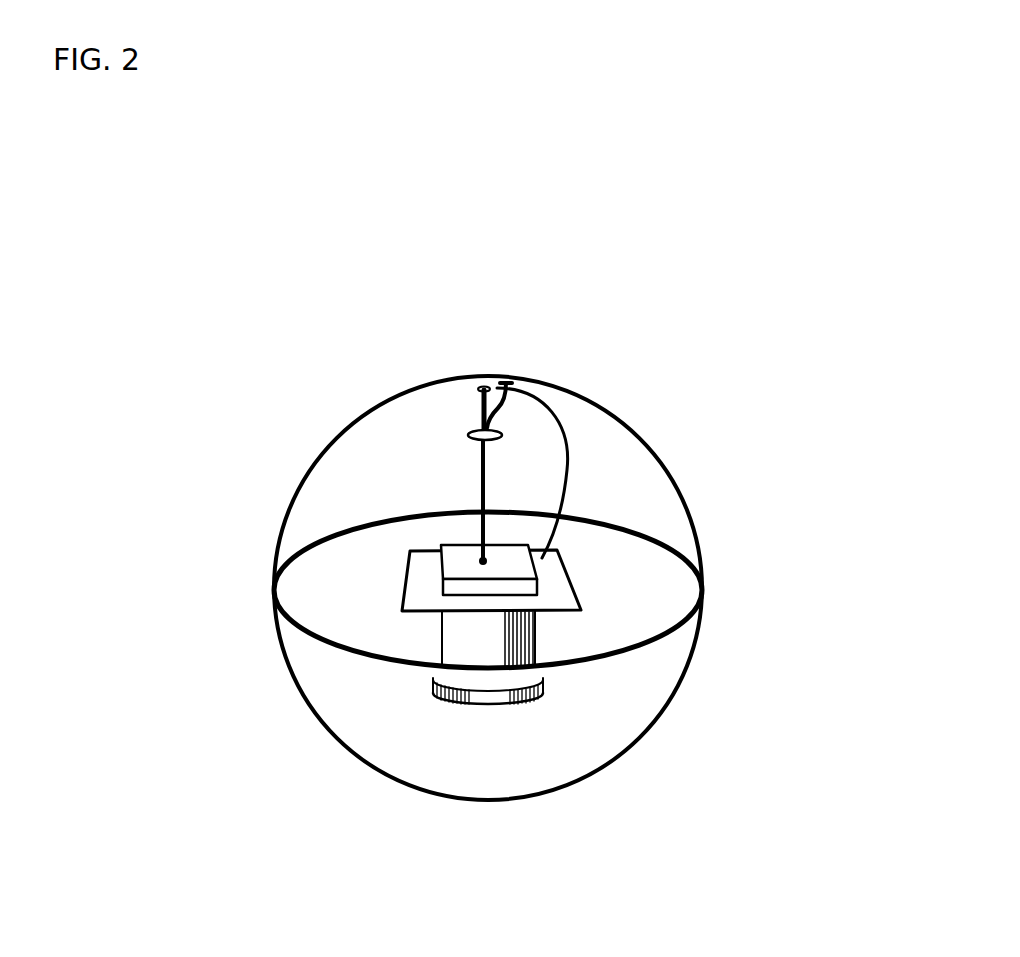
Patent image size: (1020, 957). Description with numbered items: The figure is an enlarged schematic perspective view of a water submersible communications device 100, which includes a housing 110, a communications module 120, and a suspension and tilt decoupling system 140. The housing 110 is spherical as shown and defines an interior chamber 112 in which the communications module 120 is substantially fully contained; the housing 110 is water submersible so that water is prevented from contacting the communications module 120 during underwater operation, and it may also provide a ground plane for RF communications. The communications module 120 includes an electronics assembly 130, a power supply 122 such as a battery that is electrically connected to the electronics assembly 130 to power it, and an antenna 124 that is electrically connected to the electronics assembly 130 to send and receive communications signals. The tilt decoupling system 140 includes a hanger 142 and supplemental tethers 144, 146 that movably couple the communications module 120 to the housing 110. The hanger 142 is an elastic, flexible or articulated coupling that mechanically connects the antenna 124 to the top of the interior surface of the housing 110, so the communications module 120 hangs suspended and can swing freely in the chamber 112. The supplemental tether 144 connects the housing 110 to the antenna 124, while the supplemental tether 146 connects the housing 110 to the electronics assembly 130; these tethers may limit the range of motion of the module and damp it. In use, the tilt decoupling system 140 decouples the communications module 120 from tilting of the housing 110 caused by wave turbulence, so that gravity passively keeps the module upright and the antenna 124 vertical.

The communications device 100 is at (555, 182).
The housing 110 is at (658, 458).
The interior chamber 112 is at (640, 502).
The communications module 120 is at (587, 577).
The power supply 122 is at (488, 705).
The antenna 124 is at (480, 486).
The electronics assembly 130 is at (410, 577).
The tilt decoupling system 140 is at (467, 418).
The hanger 142 is at (478, 412).
The supplemental tether 144 is at (516, 414).
The supplemental tether 146 is at (568, 468).